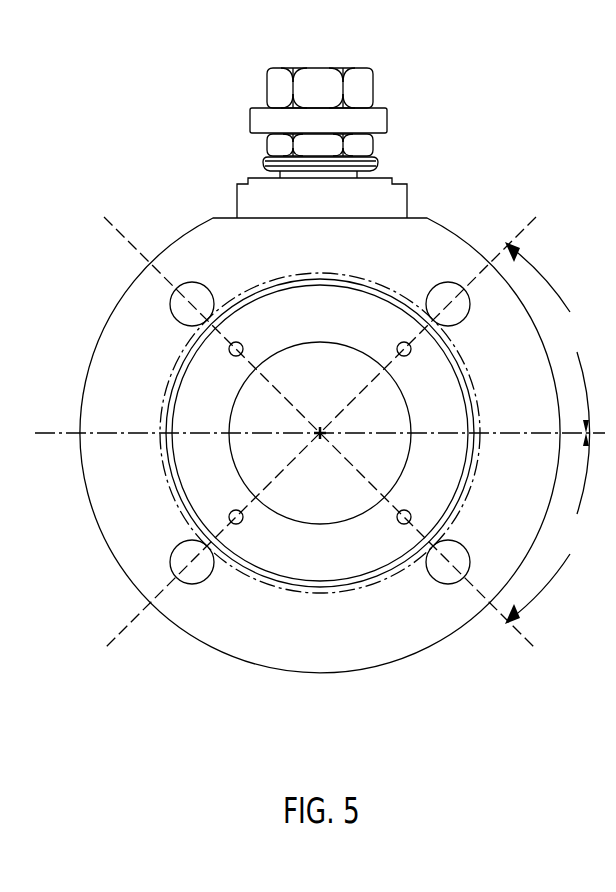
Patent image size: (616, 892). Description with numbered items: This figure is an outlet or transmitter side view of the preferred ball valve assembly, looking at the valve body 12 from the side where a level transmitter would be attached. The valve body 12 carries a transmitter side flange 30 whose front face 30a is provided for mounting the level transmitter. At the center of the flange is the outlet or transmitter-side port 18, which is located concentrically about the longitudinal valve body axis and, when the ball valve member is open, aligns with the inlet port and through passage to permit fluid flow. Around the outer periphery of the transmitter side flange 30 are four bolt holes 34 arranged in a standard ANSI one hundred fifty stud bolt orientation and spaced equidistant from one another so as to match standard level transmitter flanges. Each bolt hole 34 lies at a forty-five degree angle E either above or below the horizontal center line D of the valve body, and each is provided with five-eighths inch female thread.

The ball valve body 12 is at (174, 180).
The outlet or transmitter-side port 18 is at (260, 473).
The transmitter side flange 30 is at (391, 678).
The front face 30a is at (277, 632).
The bolt holes 34 is at (192, 290).
The horizontal center line of the valve body D is at (64, 433).
The forty-five degree angle E is at (547, 433).